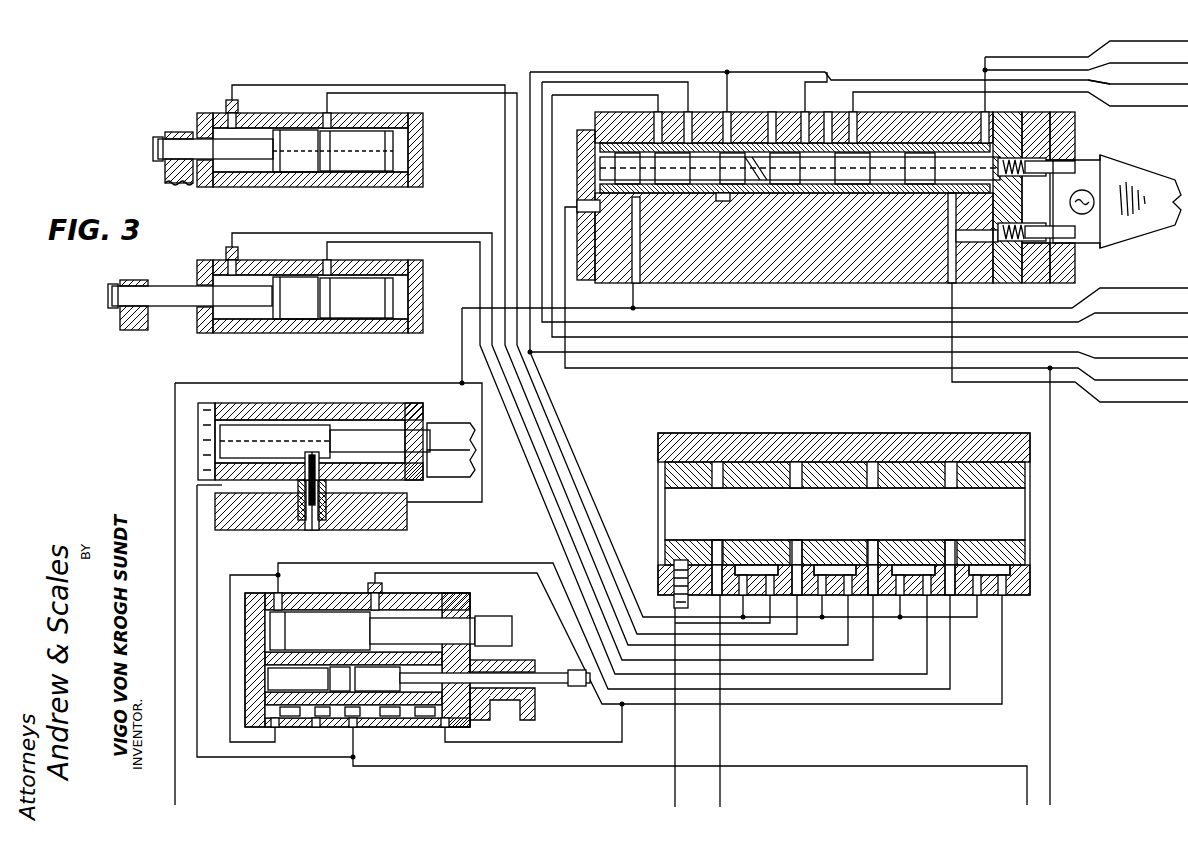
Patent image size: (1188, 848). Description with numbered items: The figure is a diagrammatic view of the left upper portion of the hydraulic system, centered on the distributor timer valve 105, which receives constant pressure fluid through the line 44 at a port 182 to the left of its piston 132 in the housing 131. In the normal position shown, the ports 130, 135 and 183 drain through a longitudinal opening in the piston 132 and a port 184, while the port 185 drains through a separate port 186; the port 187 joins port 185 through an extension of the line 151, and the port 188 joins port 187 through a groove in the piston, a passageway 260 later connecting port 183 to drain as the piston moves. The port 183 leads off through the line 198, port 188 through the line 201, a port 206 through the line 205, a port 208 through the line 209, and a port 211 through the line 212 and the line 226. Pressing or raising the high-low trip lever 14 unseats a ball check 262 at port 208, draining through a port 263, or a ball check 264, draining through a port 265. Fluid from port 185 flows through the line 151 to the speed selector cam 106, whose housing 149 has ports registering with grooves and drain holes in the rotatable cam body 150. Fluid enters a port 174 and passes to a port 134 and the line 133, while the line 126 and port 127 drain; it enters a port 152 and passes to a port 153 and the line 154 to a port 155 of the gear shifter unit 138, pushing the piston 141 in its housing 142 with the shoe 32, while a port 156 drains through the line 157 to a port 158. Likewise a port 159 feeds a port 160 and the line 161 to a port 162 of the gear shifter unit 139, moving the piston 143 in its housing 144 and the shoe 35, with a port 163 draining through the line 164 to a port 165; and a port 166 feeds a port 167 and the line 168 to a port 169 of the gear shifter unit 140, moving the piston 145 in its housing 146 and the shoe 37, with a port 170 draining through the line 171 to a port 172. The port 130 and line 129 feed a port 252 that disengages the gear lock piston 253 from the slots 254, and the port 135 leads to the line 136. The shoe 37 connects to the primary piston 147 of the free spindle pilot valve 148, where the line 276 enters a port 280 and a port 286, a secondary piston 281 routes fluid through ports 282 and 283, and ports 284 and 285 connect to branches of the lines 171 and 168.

The high-low trip lever 14 is at (1150, 228).
The shoe 32 is at (165, 177).
The shoe 35 is at (120, 322).
The shoe 37 is at (466, 478).
The line 44 is at (565, 300).
The distributor timer valve 105 is at (814, 174).
The speed selector cam 106 is at (823, 509).
The line 126 is at (720, 795).
The port 127 is at (698, 578).
The line 129 is at (462, 355).
The port 130 is at (636, 283).
The housing 131 is at (812, 283).
The piston 132 is at (855, 195).
The line 133 is at (675, 795).
The port 134 is at (765, 591).
The port 135 is at (656, 112).
The line 136 is at (870, 216).
The gear shifter unit 138 is at (173, 124).
The gear shifter unit 139 is at (186, 341).
The gear shifter unit 140 is at (456, 525).
The piston 141 is at (290, 175).
The housing 142 is at (346, 175).
The piston 143 is at (270, 322).
The housing 144 is at (330, 322).
The piston 145 is at (272, 425).
The housing 146 is at (330, 404).
The primary piston 147 is at (298, 679).
The free spindle pilot valve 148 is at (220, 692).
The housing 149 is at (842, 433).
The cam body 150 is at (658, 471).
The line 151 is at (678, 72).
The port 152 is at (835, 591).
The port 153 is at (844, 591).
The line 154 is at (286, 85).
The port 155 is at (236, 110).
The port 156 is at (325, 112).
The line 157 is at (474, 93).
The port 158 is at (807, 578).
The port 159 is at (913, 591).
The port 160 is at (922, 591).
The line 161 is at (472, 242).
The port 162 is at (325, 259).
The port 163 is at (236, 258).
The line 164 is at (254, 233).
The port 165 is at (883, 578).
The port 166 is at (989, 591).
The port 167 is at (999, 591).
The line 168 is at (535, 574).
The port 169 is at (382, 586).
The port 170 is at (280, 592).
The line 171 is at (332, 563).
The port 172 is at (961, 578).
The port 174 is at (756, 591).
The port 182 is at (574, 205).
The port 183 is at (690, 112).
The port 184 is at (774, 112).
The port 185 is at (729, 112).
The port 186 is at (725, 201).
The port 187 is at (839, 119).
The port 188 is at (812, 107).
The line 198 is at (865, 198).
The line 201 is at (1124, 77).
The line 205 is at (1020, 101).
The port 206 is at (855, 112).
The port 208 is at (955, 283).
The line 209 is at (1070, 343).
The port 211 is at (987, 112).
The line 212 is at (1086, 59).
The line 226 is at (1086, 68).
The port 252 is at (407, 500).
The gear lock piston 253 is at (298, 492).
The slots 254 is at (306, 468).
The passageway 260 is at (764, 185).
The ball check 262 is at (1036, 223).
The port 263 is at (1048, 283).
The ball check 264 is at (1036, 178).
The port 265 is at (1058, 104).
The line 276 is at (197, 562).
The port 280 is at (358, 728).
The secondary piston 281 is at (330, 727).
The port 282 is at (334, 679).
The port 283 is at (472, 679).
The port 284 is at (277, 727).
The port 285 is at (444, 727).
The port 286 is at (210, 490).